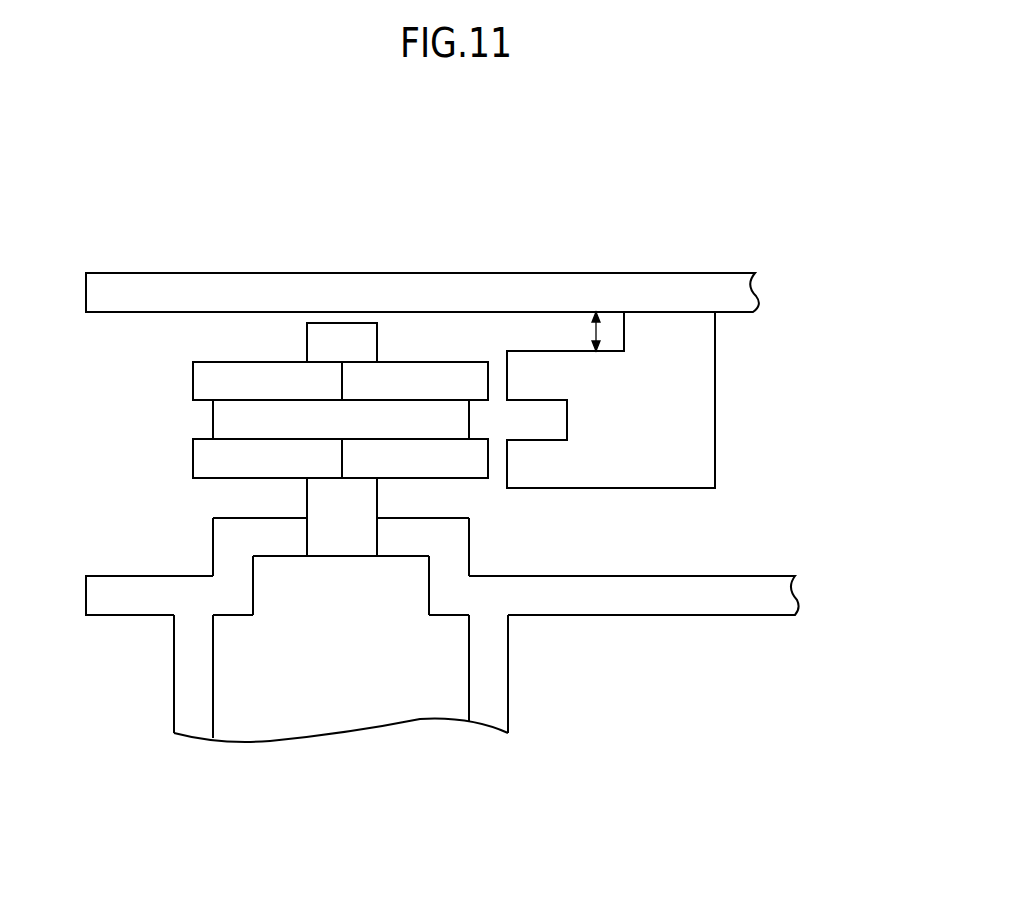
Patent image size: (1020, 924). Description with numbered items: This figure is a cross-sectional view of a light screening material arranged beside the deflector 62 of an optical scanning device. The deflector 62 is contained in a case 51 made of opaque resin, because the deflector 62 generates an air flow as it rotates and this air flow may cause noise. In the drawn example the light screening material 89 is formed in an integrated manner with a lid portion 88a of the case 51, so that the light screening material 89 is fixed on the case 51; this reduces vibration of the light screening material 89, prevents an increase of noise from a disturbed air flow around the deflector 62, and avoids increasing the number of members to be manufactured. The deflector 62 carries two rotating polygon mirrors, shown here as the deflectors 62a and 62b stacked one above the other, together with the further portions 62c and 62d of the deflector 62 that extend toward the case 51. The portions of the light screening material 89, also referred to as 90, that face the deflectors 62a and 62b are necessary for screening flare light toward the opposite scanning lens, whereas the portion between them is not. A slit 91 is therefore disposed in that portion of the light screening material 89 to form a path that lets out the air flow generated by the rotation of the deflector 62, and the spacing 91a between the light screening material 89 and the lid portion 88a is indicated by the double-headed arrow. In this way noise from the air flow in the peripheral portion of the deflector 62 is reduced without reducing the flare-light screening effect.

The case 51 is at (557, 595).
The deflector 62 is at (172, 353).
The deflector 62a is at (193, 378).
The deflector 62b is at (193, 456).
The lower body / shaft of movable unit 62c is at (347, 713).
The upper protrusion of movable unit 62d is at (341, 333).
The lid portion 88a is at (500, 273).
The light screening material 89 is at (682, 371).
The stopper block (alternate) 90 is at (611, 400).
The slit 91 is at (547, 420).
The gap between stopper block and top bar 91a is at (600, 333).